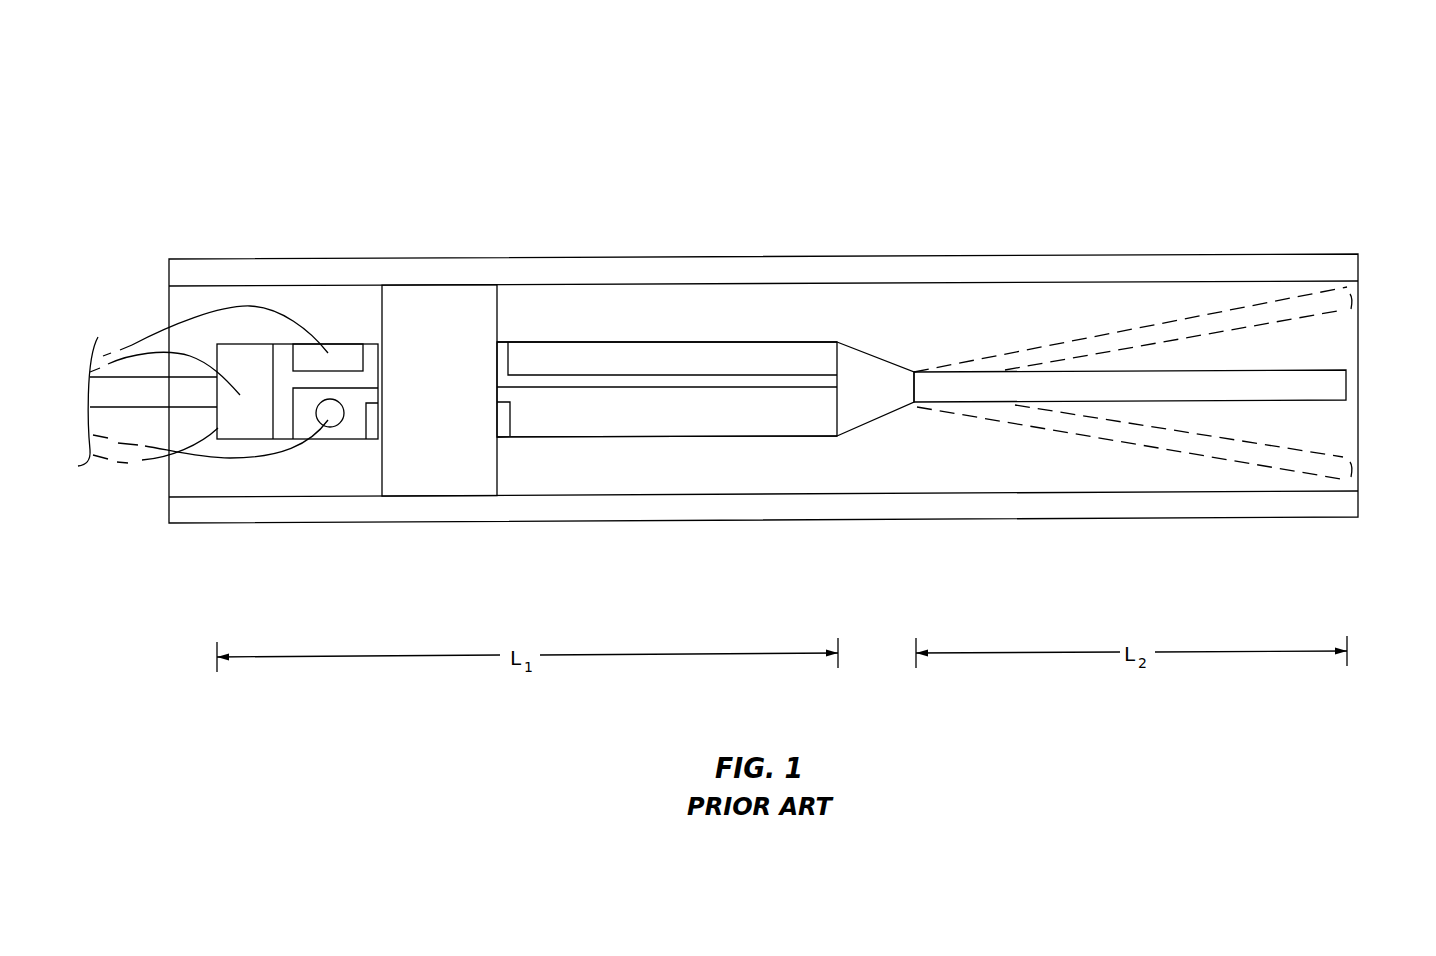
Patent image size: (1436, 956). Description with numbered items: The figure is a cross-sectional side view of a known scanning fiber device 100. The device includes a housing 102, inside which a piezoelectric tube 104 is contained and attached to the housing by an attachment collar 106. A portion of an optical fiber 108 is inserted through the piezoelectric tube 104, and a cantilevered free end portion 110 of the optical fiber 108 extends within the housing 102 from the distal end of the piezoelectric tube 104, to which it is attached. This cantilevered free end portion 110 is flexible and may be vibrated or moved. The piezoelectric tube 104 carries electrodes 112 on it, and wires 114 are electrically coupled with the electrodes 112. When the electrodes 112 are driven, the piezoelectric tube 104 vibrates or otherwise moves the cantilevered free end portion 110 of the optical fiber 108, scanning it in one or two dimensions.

The scanning fiber device 100 is at (345, 160).
The housing 102 is at (683, 257).
The piezoelectric tube 104 is at (814, 328).
The attachment collar 106 is at (498, 467).
The optical fiber 108 is at (153, 397).
The cantilevered free end portion 110 is at (1298, 358).
The electrodes 112 is at (714, 341).
The wires 114 is at (119, 335).